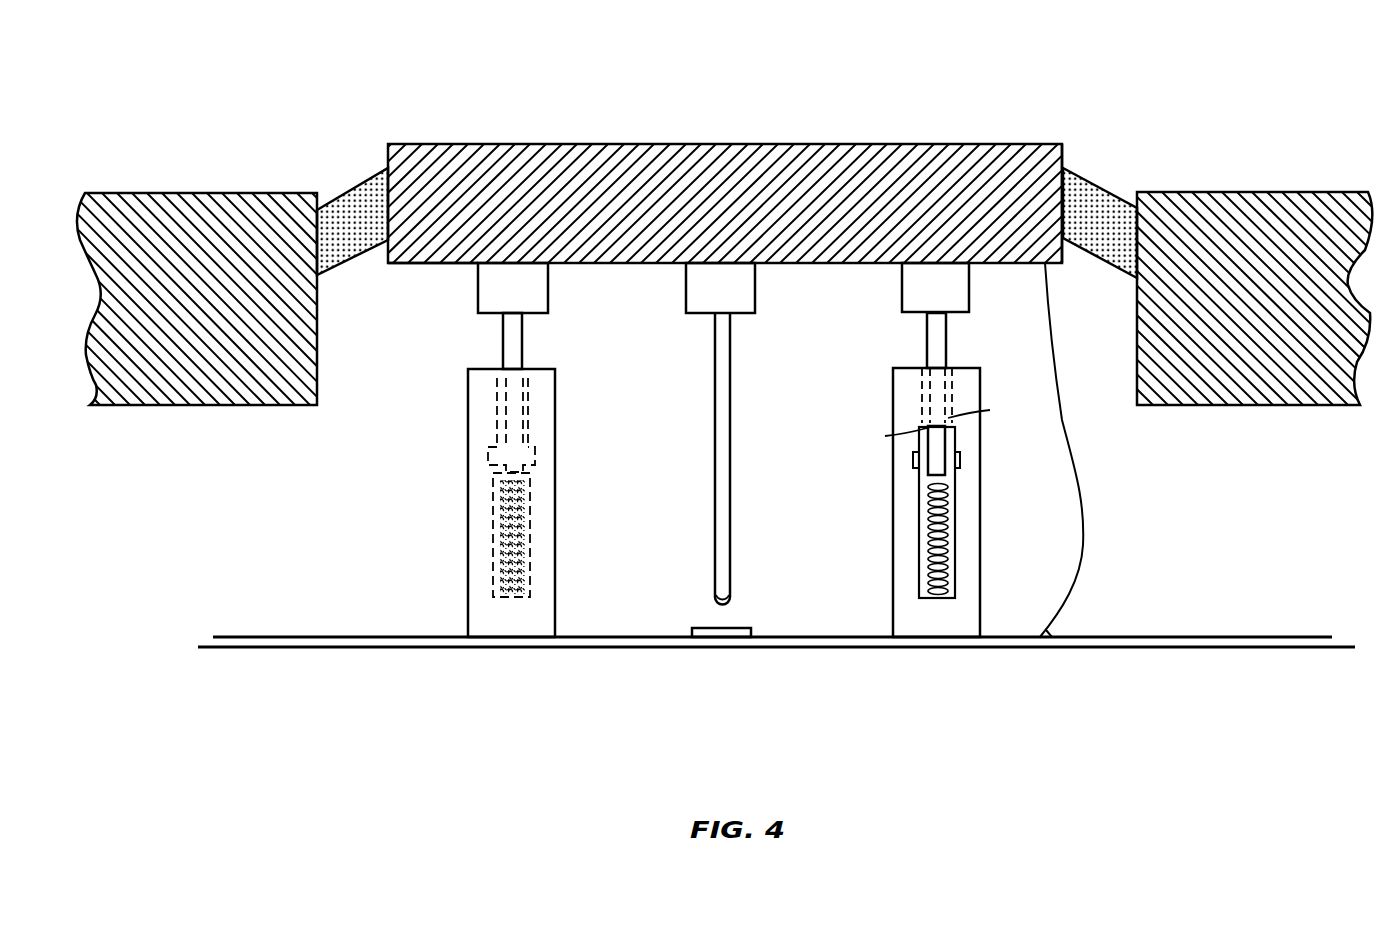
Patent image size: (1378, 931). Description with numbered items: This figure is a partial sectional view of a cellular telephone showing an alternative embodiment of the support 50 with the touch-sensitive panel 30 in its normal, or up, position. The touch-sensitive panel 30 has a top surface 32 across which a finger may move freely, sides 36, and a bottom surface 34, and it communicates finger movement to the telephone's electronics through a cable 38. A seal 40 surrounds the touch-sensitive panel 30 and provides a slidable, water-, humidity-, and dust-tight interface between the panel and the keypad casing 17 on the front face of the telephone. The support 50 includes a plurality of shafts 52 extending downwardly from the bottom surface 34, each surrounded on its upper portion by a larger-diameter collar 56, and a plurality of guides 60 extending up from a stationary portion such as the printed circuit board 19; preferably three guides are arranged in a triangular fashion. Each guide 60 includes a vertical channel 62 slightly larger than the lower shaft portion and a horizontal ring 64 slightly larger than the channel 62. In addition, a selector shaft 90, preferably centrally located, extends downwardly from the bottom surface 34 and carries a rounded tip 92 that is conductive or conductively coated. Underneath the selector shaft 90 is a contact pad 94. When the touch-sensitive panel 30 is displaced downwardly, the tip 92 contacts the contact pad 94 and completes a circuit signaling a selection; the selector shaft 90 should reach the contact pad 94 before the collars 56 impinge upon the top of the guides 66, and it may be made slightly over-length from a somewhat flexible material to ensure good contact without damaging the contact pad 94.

The keypad casing 17 is at (165, 212).
The printed circuit board 19 is at (1225, 637).
The touch-sensitive panel 30 is at (725, 143).
The top surface 32 is at (912, 143).
The bottom surface 34 is at (425, 265).
The sides 36 is at (1062, 150).
The cable 38 is at (1083, 507).
The seal 40 is at (352, 205).
The support 50 is at (490, 475).
The shaft 52 is at (927, 336).
The collar 56 is at (548, 298).
The guide 60 is at (556, 420).
The channel 62 is at (922, 573).
The ring 64 is at (700, 417).
The top of the guide 66 is at (939, 491).
The selector shaft 90 is at (715, 348).
The rounded tip 92 is at (725, 597).
The contact pad 94 is at (712, 637).